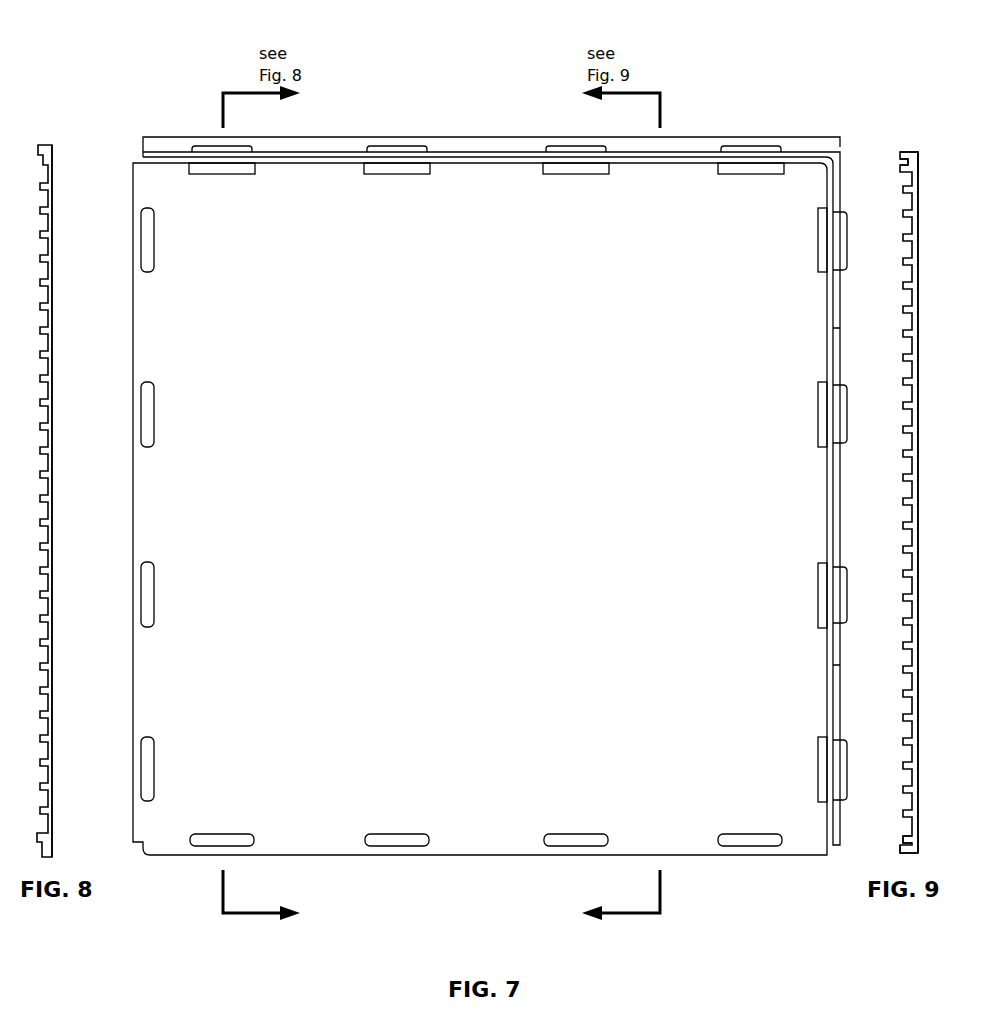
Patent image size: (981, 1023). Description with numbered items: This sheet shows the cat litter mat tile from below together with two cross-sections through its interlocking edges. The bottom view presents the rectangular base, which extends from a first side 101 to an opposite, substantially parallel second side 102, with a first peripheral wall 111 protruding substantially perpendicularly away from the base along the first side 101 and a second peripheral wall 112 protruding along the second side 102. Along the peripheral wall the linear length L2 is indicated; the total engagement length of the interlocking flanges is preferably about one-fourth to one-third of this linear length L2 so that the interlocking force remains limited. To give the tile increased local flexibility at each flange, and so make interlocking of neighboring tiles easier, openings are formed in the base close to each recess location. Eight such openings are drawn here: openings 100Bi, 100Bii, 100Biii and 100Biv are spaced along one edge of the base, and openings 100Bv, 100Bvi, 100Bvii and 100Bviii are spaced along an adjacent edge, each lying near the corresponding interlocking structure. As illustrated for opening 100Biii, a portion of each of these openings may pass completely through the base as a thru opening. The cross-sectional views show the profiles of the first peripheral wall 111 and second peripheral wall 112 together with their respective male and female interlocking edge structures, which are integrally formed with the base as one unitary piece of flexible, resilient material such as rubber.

In FIG. 7, the opening 100Bi is at (140, 238).
In FIG. 7, the opening 100Bii is at (140, 414).
In FIG. 7, the opening 100Biii is at (140, 600).
In FIG. 7, the opening 100Biv is at (140, 765).
In FIG. 7, the opening 100Bv is at (252, 847).
In FIG. 7, the opening 100Bvi is at (425, 847).
In FIG. 7, the opening 100Bvii is at (566, 848).
In FIG. 7, the opening 100Bviii is at (745, 848).
In FIG. 9, the first side 101 is at (900, 160).
In FIG. 9, the second side 102 is at (900, 855).
In FIG. 9, the first peripheral wall 111 is at (905, 175).
In FIG. 9, the second peripheral wall 112 is at (907, 838).
In FIG. 7, the linear length of the peripheral wall L2 is at (492, 137).